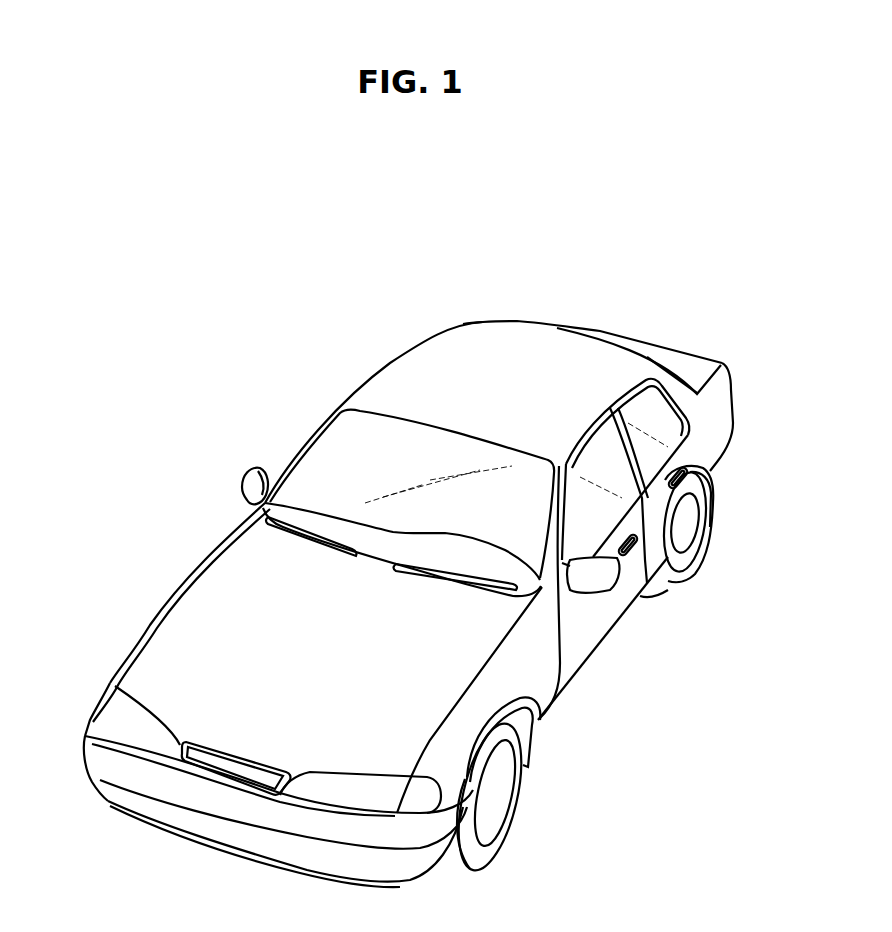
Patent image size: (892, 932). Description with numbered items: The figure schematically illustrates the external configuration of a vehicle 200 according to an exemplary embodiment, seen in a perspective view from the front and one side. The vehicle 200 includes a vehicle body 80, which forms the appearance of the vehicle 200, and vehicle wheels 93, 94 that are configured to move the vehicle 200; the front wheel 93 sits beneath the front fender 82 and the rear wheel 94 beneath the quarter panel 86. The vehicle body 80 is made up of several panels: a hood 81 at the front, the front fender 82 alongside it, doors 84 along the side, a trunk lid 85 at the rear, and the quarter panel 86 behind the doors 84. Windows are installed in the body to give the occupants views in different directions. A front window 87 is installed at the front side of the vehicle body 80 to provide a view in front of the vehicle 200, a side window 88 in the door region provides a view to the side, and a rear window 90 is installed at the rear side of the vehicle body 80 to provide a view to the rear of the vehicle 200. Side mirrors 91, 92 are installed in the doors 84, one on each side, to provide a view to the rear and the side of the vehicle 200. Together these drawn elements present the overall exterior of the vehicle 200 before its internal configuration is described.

The vehicle 200 is at (245, 319).
The vehicle body 80 is at (411, 339).
The hood 81 is at (176, 620).
The front fender 82 is at (550, 665).
The doors 84 is at (583, 630).
The trunk lid 85 is at (687, 358).
The quarter panel 86 is at (727, 391).
The front window 87 is at (334, 446).
The side window 88 is at (600, 523).
The rear window 90 is at (663, 360).
The side mirror 91 is at (605, 578).
The side mirror 92 is at (247, 489).
The vehicle wheel 93 is at (492, 795).
The vehicle wheel 94 is at (690, 526).